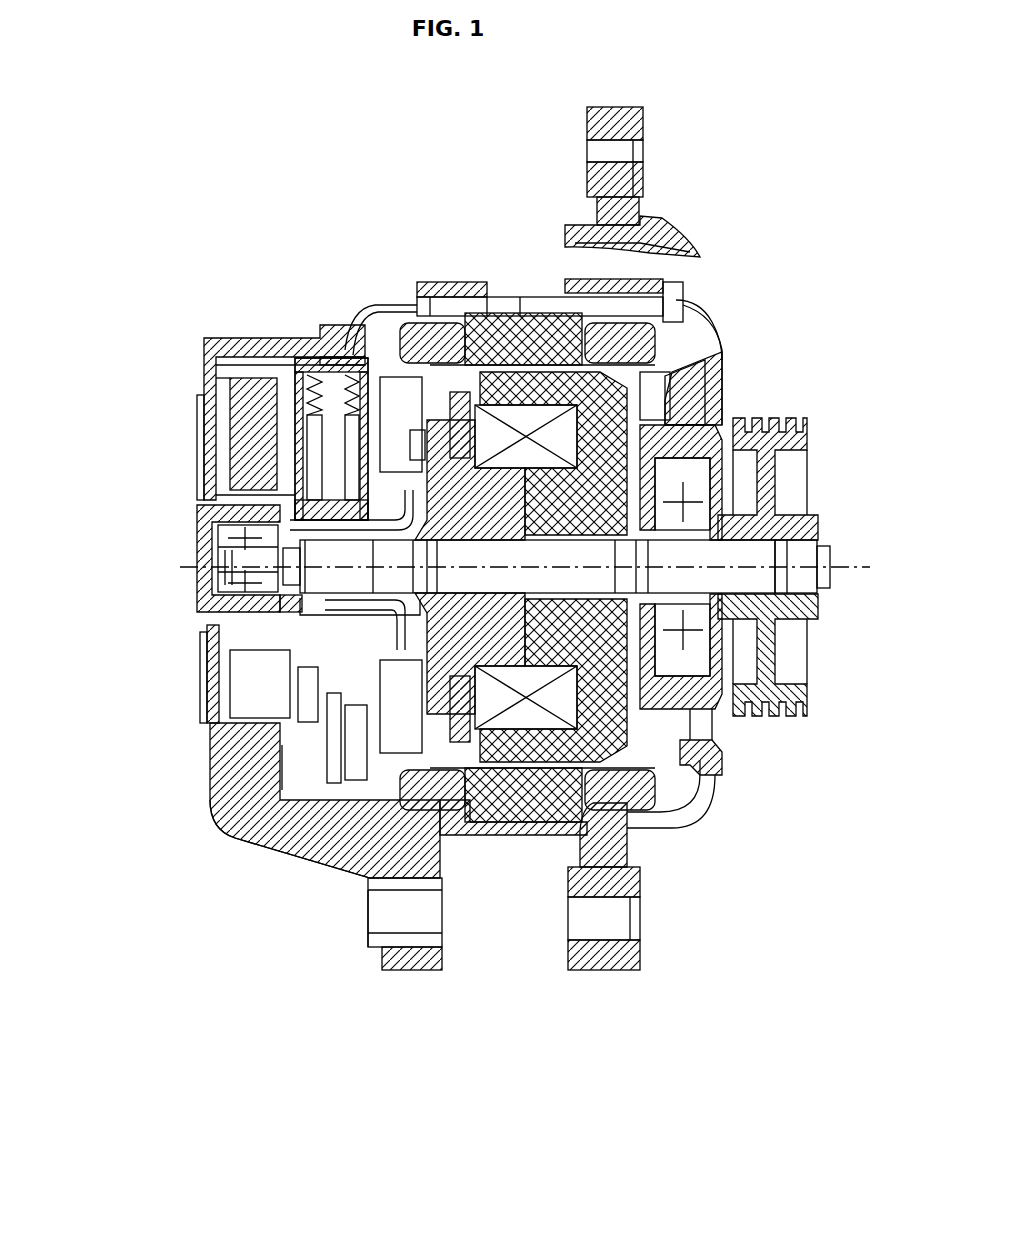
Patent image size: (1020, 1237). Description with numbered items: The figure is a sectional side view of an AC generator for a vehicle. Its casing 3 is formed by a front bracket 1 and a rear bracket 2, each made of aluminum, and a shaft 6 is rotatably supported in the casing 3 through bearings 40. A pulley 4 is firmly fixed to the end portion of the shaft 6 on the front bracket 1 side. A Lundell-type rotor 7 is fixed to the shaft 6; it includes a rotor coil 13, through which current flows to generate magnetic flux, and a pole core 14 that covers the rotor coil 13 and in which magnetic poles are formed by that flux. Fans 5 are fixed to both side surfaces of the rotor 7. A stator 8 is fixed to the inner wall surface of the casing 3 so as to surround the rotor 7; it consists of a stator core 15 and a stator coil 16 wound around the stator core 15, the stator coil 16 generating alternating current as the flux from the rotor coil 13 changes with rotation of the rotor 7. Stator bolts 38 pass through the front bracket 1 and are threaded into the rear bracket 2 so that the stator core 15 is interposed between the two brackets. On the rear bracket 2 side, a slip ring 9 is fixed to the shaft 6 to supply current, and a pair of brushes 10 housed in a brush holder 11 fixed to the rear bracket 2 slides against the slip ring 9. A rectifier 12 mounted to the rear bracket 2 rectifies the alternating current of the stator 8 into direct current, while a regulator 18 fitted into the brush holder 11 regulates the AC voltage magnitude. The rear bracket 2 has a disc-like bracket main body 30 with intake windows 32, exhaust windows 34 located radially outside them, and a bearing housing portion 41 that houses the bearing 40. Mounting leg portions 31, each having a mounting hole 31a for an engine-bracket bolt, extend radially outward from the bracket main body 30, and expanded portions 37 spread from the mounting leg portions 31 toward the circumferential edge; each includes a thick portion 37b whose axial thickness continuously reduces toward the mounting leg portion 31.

The front bracket 1 is at (683, 820).
The rear bracket 2 is at (445, 822).
The casing 3 is at (447, 252).
The pulley 4 is at (786, 418).
The fans 5 is at (282, 770).
The shaft 6 is at (762, 585).
The rotor 7 is at (700, 380).
The stator 8 is at (500, 760).
The slip ring 9 is at (200, 612).
The brushes 10 is at (345, 455).
The brush holder 11 is at (330, 358).
The rectifier 12 is at (300, 680).
The rotor coil 13 is at (498, 705).
The pole core 14 is at (560, 770).
The stator core 15 is at (537, 313).
The stator coil 16 is at (690, 348).
The regulator 18 is at (275, 415).
The bracket main body 30 is at (230, 752).
The mounting leg portions 31 is at (438, 958).
The mounting hole 31a is at (408, 915).
The intake windows 32 is at (210, 463).
The exhaust windows 34 is at (365, 305).
The expanded portions 37 is at (228, 838).
The thick portion 37b is at (205, 815).
The stator bolts 38 is at (505, 293).
The bearings 40 is at (225, 545).
The bearing housing portion 41 is at (200, 518).